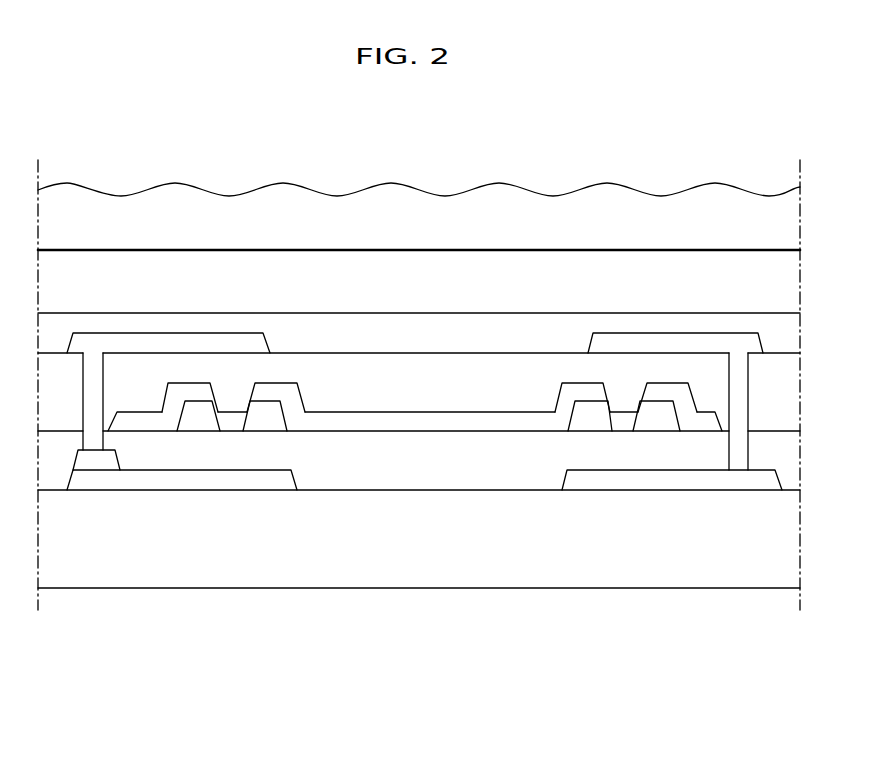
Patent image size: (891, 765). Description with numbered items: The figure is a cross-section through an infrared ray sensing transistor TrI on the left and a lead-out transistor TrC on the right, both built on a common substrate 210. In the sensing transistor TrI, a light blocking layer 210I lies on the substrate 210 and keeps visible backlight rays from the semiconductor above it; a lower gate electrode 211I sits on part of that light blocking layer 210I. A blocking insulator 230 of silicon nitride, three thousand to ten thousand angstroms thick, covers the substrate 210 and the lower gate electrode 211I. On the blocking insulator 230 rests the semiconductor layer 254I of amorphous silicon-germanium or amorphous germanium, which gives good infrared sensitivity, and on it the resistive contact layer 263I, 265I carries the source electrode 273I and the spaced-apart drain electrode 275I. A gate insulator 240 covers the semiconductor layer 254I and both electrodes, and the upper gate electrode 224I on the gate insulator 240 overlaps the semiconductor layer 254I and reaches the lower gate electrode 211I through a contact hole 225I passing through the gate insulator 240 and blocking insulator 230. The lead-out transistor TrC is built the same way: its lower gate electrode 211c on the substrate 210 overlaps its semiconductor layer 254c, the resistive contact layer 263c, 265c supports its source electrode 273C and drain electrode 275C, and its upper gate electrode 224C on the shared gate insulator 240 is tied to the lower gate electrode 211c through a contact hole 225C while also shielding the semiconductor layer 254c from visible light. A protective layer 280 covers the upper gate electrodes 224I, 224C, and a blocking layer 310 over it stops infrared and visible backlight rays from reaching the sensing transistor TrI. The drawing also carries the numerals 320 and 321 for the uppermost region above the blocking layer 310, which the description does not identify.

The substrate 210 is at (372, 566).
The light blocking layer 210I is at (160, 480).
The lower gate electrode 211I is at (108, 463).
The lower gate electrode 211c is at (752, 480).
The contact hole 225I is at (93, 455).
The contact hole 225C is at (745, 360).
The upper gate electrode 224I is at (235, 340).
The upper gate electrode 224C is at (625, 340).
The blocking insulator 230 is at (783, 453).
The gate insulator 240 is at (783, 399).
The semiconductor layer 254I is at (238, 418).
The semiconductor layer 254c is at (623, 420).
The resistive contact layer 263I is at (270, 410).
The resistive contact layer 263c is at (663, 410).
The resistive contact layer 265I is at (192, 410).
The resistive contact layer 265c is at (593, 410).
The source electrode 273I is at (265, 390).
The source electrode 273C is at (662, 388).
The drain electrode 275I is at (195, 387).
The drain electrode 275C is at (585, 388).
The protective layer 280 is at (783, 336).
The blocking layer 310 is at (783, 281).
The pixel electrode layer 320 is at (783, 226).
The upper layer boundary 321 is at (443, 195).
The infrared ray sensing transistor TrI is at (173, 700).
The lead-out transistor TrC is at (643, 670).